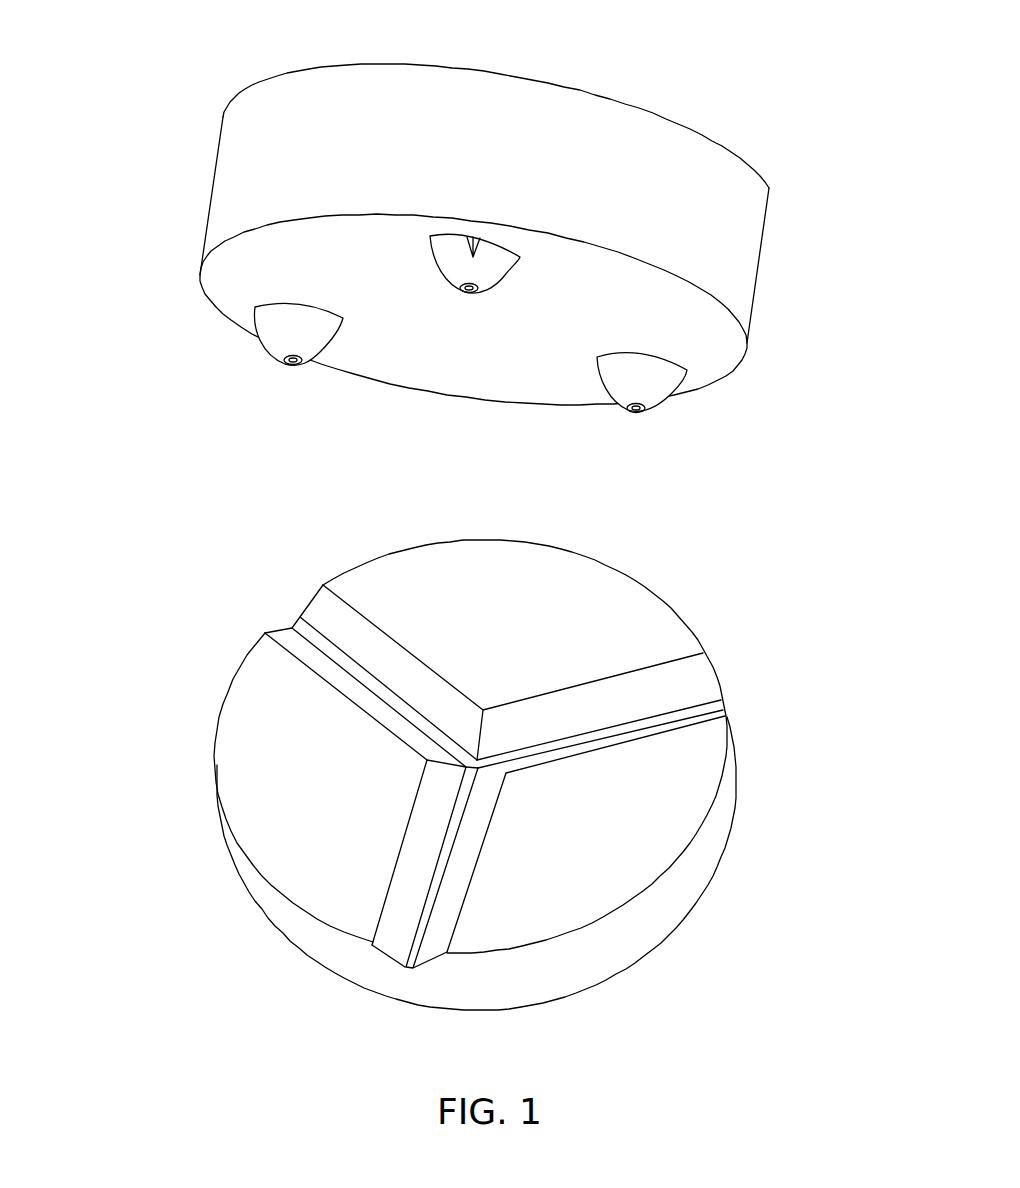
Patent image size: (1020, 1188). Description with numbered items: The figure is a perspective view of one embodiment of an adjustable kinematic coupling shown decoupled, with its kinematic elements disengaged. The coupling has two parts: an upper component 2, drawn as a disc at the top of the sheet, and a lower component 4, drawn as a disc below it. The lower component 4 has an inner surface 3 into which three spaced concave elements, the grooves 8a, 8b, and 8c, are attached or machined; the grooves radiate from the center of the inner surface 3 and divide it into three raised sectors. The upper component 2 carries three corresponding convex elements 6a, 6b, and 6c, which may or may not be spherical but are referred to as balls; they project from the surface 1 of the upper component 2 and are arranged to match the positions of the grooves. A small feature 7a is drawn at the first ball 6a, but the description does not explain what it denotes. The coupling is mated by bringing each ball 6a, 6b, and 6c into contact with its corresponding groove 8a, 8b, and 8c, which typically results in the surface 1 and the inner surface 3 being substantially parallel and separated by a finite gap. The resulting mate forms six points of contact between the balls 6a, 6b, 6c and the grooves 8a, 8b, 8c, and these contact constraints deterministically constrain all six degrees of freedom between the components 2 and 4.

The surface 1 is at (273, 283).
The upper component 2 is at (215, 180).
The inner surface 3 is at (600, 843).
The lower component 4 is at (278, 933).
The convex element 6a is at (497, 238).
The convex element 6b is at (267, 345).
The convex element 6c is at (687, 393).
The pin 7a is at (473, 237).
The groove 8a is at (395, 944).
The groove 8b is at (327, 622).
The groove 8c is at (690, 685).